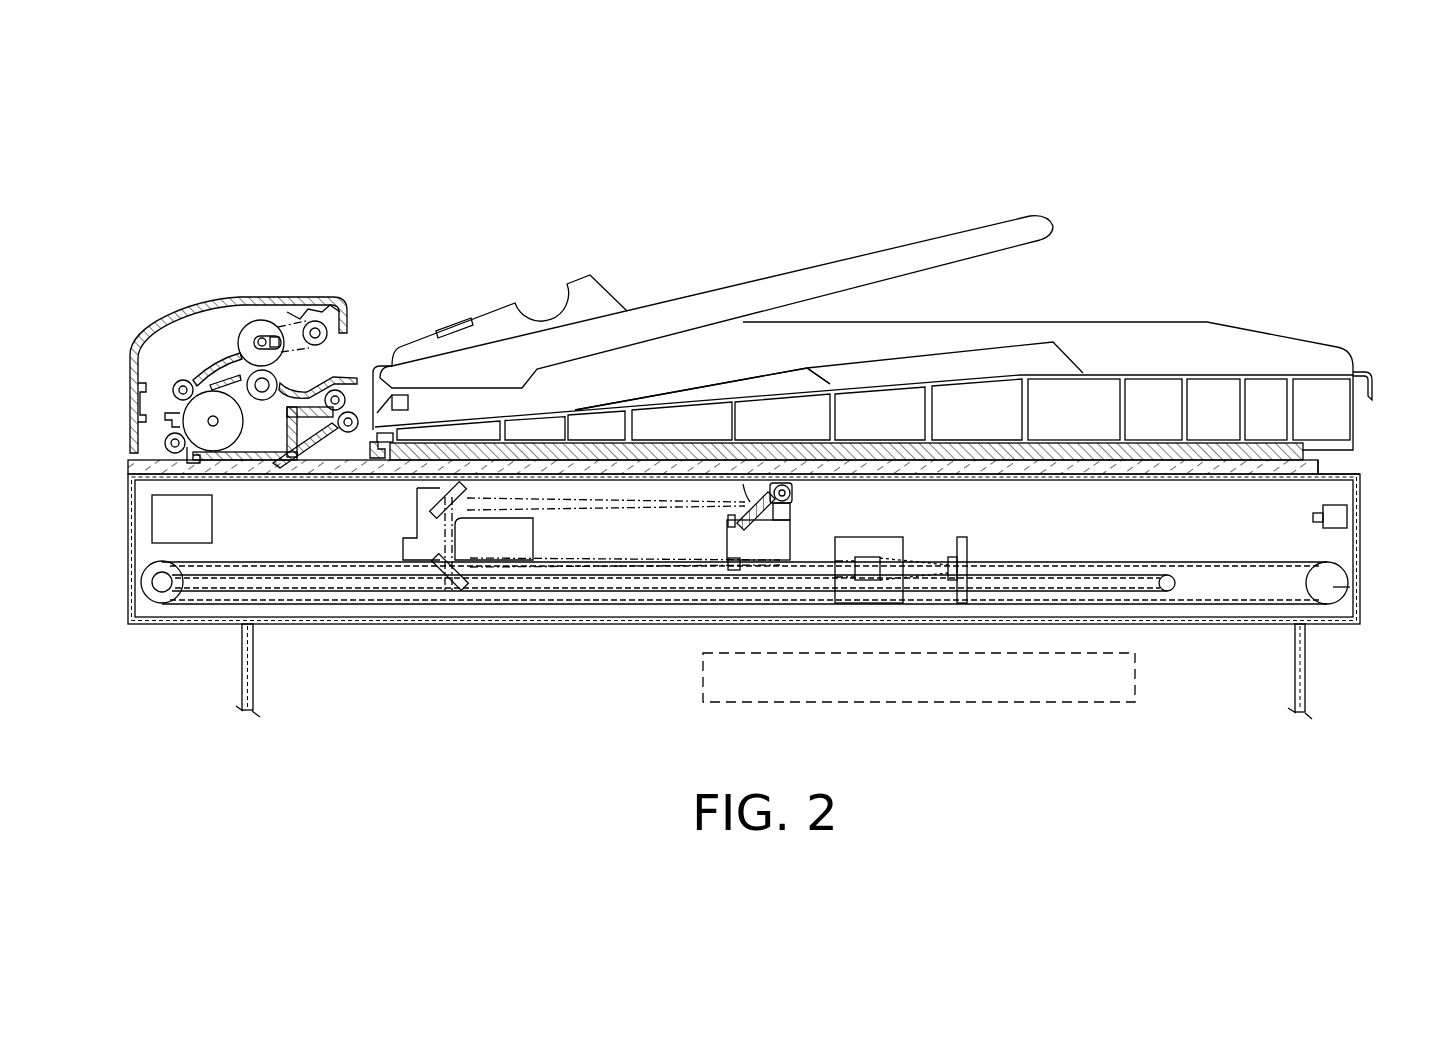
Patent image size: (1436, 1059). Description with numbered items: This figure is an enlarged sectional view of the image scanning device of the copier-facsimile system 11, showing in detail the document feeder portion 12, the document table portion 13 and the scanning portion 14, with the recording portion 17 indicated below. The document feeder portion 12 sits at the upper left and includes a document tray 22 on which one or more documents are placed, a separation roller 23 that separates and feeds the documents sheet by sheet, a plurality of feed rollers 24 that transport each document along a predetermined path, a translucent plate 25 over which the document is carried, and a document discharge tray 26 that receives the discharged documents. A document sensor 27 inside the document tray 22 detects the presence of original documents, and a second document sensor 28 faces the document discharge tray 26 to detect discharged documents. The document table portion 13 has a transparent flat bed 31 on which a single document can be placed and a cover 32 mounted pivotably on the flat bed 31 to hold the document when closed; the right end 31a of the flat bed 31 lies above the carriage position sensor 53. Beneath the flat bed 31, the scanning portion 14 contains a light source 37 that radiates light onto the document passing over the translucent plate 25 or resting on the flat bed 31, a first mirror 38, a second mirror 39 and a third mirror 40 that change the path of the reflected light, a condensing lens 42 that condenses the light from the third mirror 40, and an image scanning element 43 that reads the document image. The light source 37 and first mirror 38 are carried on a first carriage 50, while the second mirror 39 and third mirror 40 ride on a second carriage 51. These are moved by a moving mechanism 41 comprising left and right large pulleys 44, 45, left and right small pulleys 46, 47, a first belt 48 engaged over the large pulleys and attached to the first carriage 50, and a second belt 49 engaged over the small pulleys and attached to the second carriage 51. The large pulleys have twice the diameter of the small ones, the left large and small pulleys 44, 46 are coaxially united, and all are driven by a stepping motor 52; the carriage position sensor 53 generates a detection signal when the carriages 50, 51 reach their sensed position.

The copier-facsimile system 11 is at (1372, 532).
The document feeder portion 12 is at (185, 318).
The document table portion 13 is at (1142, 318).
The scanning portion 14 is at (996, 545).
The recording portion 17 is at (903, 692).
The document tray 22 is at (787, 272).
The separation roller 23 is at (262, 320).
The feed rollers 24 is at (190, 381).
The translucent plate 25 is at (248, 472).
The document discharge tray 26 is at (620, 400).
The document sensor 27 is at (414, 368).
The second document sensor 28 is at (403, 395).
The transparent plate 31 is at (1140, 474).
The right end of the flat bed 31a is at (1318, 462).
The cover 32 is at (1083, 450).
The light source 37 is at (800, 493).
The first mirror 38 is at (727, 530).
The second mirror 39 is at (427, 502).
The third mirror 40 is at (438, 592).
The moving mechanism 41 is at (226, 614).
The condensing lens 42 is at (877, 557).
The image scanning element 43 is at (952, 557).
The left large pulley 44 is at (160, 593).
The right large pulley 45 is at (1358, 590).
The left small pulley 46 is at (157, 582).
The right small pulley 47 is at (1168, 591).
The first belt 48 is at (543, 604).
The second belt 49 is at (627, 592).
The first carriage 50 is at (785, 547).
The second carriage 51 is at (523, 542).
The stepping motor 52 is at (212, 516).
The carriage position sensor 53 is at (1320, 526).